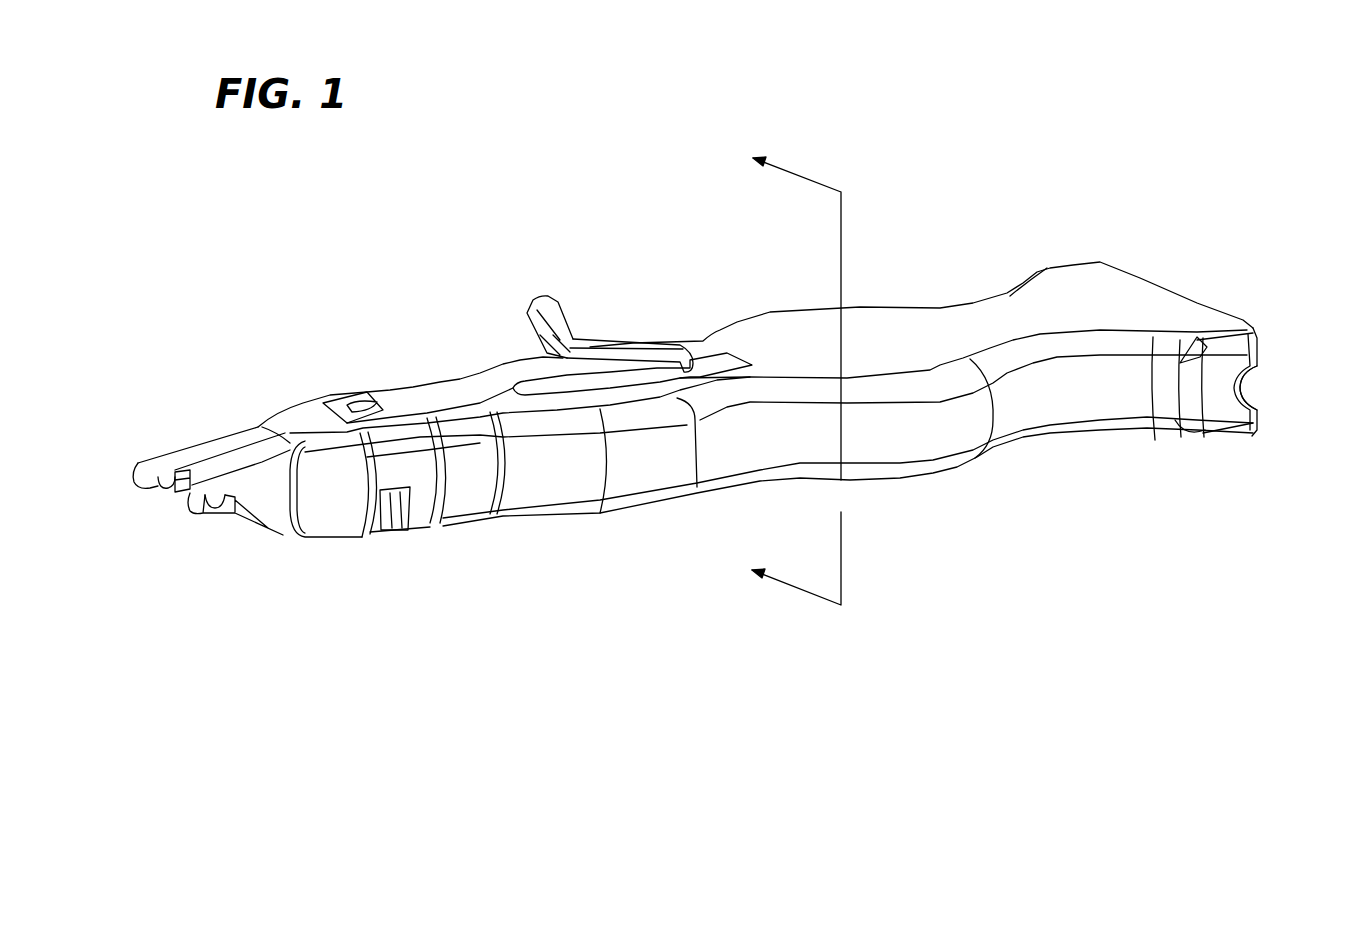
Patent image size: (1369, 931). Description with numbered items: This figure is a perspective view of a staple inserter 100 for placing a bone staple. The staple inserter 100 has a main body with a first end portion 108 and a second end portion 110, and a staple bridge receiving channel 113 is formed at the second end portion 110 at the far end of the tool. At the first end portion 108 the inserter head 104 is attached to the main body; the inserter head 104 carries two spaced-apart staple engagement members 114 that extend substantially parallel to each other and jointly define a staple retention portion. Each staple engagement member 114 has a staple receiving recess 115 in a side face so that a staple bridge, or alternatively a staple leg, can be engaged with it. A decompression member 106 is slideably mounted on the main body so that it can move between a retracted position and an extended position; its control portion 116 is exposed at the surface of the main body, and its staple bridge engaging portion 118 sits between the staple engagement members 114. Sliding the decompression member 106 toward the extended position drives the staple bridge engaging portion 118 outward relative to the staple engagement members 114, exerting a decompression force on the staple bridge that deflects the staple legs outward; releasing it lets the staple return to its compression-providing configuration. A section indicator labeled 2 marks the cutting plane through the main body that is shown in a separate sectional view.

The staple inserter 100 is at (412, 270).
The inserter head 104 is at (332, 527).
The decompression member 106 is at (630, 345).
The first end portion 108 is at (450, 510).
The second end portion 110 is at (1173, 420).
The staple bridge receiving channel 113 is at (1258, 373).
The spaced-apart staple engagement members 114 is at (155, 452).
The staple receiving recess 115 is at (162, 493).
The control portion 116 is at (550, 313).
The staple bridge engaging portion 118 is at (198, 478).
The section line 2- 2 is at (769, 372).